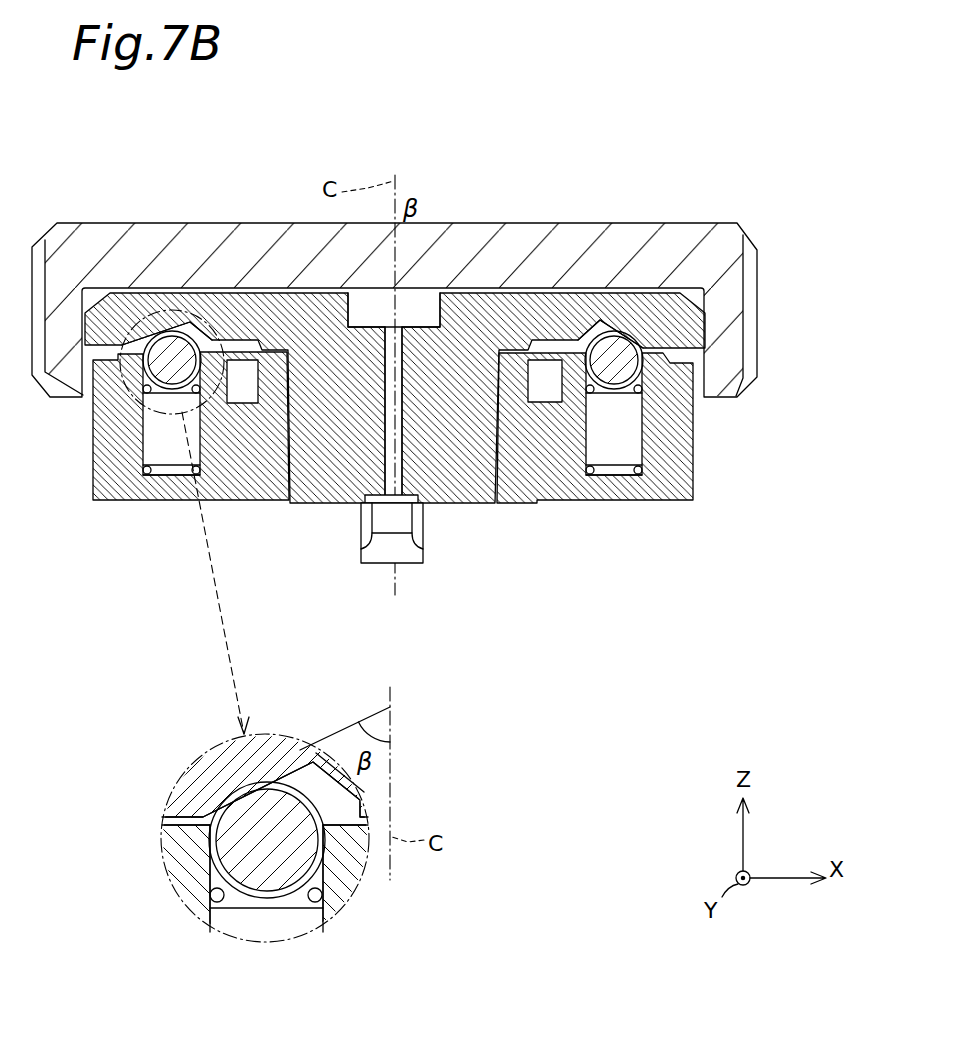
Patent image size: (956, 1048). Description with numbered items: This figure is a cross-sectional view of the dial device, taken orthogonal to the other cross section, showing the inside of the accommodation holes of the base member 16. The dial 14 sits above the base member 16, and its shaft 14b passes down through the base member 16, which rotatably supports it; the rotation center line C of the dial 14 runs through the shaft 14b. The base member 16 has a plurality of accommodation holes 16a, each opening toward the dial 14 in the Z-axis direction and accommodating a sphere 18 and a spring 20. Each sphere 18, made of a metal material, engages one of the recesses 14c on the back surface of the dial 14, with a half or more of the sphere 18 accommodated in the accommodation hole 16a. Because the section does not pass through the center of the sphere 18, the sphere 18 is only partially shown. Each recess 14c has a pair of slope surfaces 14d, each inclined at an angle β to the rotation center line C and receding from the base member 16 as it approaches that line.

The dial 14 is at (491, 270).
The shaft 14b is at (463, 441).
The recess 14c is at (198, 326).
The slope surface 14d is at (304, 756).
The base member 16 is at (550, 463).
The accommodation hole 16a is at (262, 451).
The sphere 18 is at (185, 372).
The spring 20 is at (172, 474).